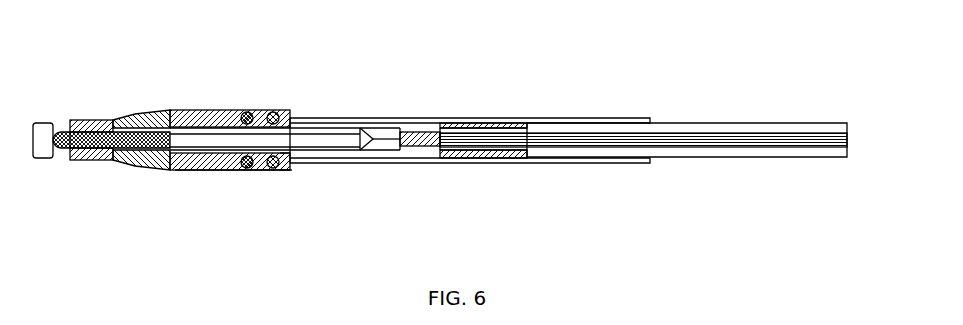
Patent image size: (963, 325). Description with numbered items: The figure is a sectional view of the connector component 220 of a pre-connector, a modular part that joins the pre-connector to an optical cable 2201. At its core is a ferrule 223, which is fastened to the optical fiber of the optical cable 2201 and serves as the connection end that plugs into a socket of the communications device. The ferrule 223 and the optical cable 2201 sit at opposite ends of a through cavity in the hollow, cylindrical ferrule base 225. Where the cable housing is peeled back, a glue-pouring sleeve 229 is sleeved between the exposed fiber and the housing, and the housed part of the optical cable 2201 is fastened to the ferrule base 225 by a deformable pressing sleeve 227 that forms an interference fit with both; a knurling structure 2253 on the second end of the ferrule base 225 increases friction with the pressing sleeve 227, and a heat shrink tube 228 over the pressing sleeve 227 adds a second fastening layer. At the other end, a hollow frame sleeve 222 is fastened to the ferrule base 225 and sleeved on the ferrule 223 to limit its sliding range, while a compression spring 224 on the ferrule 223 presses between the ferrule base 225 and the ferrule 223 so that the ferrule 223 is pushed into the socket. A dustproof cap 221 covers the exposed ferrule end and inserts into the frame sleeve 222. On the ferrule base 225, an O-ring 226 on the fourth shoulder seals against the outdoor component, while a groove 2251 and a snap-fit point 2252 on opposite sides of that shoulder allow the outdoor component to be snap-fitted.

The connector component 220 is at (782, 68).
The dustproof cap 221 is at (45, 121).
The frame sleeve 222 is at (80, 121).
The ferrule 223 is at (95, 133).
The compression spring 224 is at (141, 128).
The ferrule base 225 is at (213, 122).
The groove 2251 is at (192, 171).
The snap-fit point 2252 is at (290, 171).
The knurling structure 2253 is at (348, 125).
The O-ring 226 is at (250, 115).
The pressing sleeve 227 is at (398, 119).
The heat shrink tube 228 is at (434, 113).
The glue-pouring sleeve 229 is at (473, 131).
The optical cable 2201 is at (583, 133).